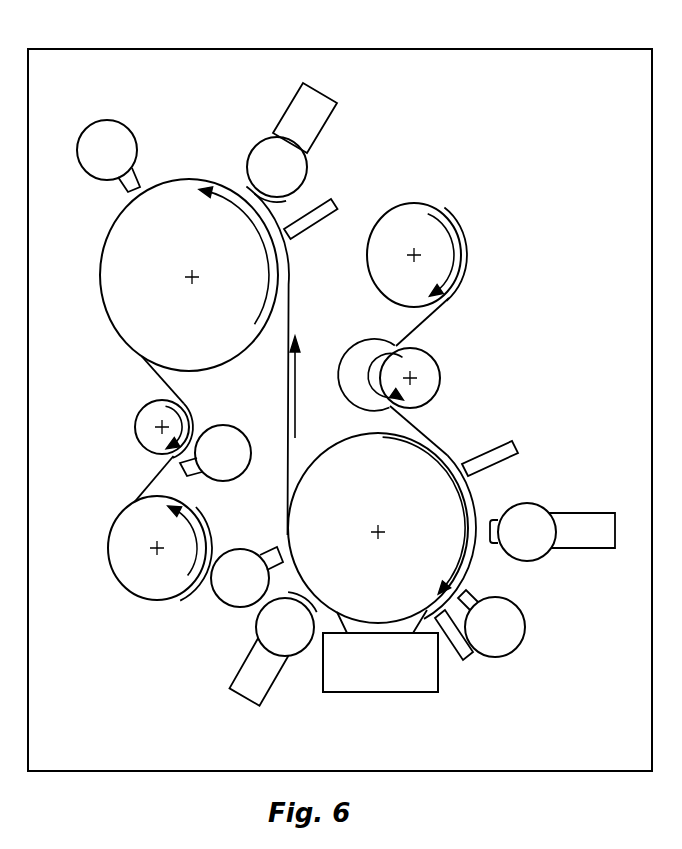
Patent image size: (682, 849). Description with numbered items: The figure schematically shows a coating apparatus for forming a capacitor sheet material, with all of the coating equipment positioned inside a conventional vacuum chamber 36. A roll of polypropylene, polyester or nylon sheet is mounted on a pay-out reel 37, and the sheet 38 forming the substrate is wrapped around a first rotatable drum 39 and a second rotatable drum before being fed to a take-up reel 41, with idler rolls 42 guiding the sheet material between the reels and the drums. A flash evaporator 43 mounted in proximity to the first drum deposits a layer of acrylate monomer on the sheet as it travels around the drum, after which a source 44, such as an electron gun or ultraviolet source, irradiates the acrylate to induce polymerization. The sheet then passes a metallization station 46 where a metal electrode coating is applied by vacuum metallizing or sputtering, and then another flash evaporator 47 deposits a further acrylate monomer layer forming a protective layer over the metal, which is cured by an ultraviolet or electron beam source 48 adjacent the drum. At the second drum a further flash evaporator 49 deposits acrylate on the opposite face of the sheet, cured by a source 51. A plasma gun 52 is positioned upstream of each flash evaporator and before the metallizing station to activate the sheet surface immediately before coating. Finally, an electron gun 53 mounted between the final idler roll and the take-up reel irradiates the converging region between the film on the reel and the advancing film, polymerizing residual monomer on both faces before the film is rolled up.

The vacuum chamber 36 is at (535, 49).
The pay-out reel 37 is at (446, 211).
The sheet 38 is at (286, 387).
The first rotatable drum 39 is at (352, 418).
The take-up reel 41 is at (138, 598).
The idler rolls 42 is at (132, 421).
The flash evaporator 43 is at (597, 513).
The source 44 is at (513, 656).
The metallization station 46 is at (402, 692).
The flash evaporator 47 is at (241, 700).
The ultraviolet or electron beam source 48 is at (218, 605).
The flash evaporator 49 is at (288, 113).
The ultraviolet or electron beam source 51 is at (128, 131).
The plasma gun 52 is at (327, 203).
The electron gun 53 is at (237, 463).